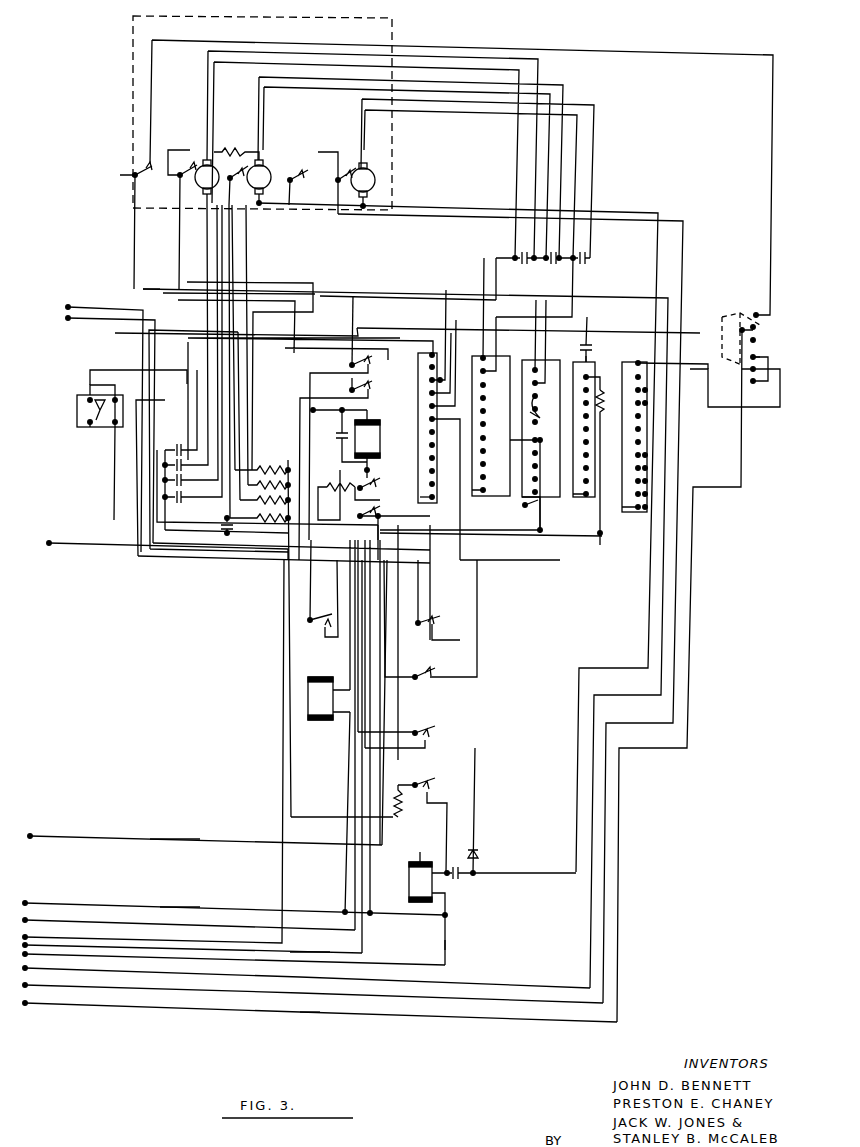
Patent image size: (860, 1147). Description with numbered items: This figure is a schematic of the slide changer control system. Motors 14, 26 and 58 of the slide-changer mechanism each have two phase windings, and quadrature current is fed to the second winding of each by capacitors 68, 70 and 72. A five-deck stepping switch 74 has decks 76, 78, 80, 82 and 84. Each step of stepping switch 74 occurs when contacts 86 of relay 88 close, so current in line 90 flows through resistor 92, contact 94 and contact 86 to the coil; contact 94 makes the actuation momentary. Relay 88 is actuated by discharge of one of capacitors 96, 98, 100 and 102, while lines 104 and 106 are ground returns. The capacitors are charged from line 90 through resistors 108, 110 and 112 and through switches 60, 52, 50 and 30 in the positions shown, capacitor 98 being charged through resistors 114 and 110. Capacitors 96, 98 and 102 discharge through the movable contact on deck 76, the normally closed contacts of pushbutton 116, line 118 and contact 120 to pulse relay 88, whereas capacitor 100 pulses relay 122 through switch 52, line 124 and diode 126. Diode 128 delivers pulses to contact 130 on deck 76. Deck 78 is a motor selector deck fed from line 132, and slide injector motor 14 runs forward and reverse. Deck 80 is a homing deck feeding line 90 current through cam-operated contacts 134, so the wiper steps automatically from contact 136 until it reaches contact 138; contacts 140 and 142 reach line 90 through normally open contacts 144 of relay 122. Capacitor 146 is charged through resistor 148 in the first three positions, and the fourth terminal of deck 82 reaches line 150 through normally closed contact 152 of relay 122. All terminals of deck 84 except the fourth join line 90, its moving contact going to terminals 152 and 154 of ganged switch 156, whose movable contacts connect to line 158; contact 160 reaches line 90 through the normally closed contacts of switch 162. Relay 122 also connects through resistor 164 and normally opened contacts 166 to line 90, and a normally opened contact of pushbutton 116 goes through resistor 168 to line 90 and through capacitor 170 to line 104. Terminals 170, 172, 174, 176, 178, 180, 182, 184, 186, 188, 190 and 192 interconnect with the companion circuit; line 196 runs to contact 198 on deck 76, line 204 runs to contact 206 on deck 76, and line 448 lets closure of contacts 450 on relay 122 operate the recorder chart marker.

The slide injector motor 14 is at (259, 160).
The motor 26 is at (207, 160).
The switch 30 is at (178, 172).
The switch 50 is at (230, 176).
The switch 52 is at (290, 178).
The motor 58 is at (375, 167).
The switch 60 is at (338, 178).
The capacitor 68 is at (547, 265).
The capacitor 70 is at (518, 254).
The capacitor 72 is at (582, 265).
The five-deck stepping switch 74 is at (375, 448).
The deck 76 is at (418, 360).
The motor selector deck 78 is at (480, 418).
The homing deck 80 is at (535, 362).
The deck 82 is at (586, 363).
The deck 84 is at (636, 362).
The contacts 86 is at (310, 618).
The relay 88 is at (312, 694).
The line 90 is at (540, 534).
The resistor 92 is at (349, 495).
The contact 94 is at (378, 476).
The capacitor 96 is at (175, 447).
The capacitor 98 is at (185, 337).
The capacitor 100 is at (190, 345).
The capacitor 102 is at (181, 498).
The line 104 is at (168, 907).
The line 106 is at (445, 945).
The resistor 108 is at (262, 423).
The resistor 110 is at (280, 480).
The resistor 112 is at (278, 465).
The resistor 114 is at (243, 148).
The pushbutton 116 is at (217, 424).
The line 118 is at (386, 396).
The contact 120 is at (382, 511).
The relay 122 is at (420, 860).
The line 124 is at (630, 208).
The diode 126 is at (460, 879).
The diode 128 is at (480, 852).
The contact 130 is at (419, 339).
The line 132 is at (600, 298).
The contacts 134 is at (352, 366).
The contact 136 is at (513, 465).
The contact 138 is at (528, 506).
The contact 140 is at (551, 343).
The contact 142 is at (550, 404).
The normally open contacts 144 is at (418, 620).
The capacitor 146 is at (588, 345).
The resistor 148 is at (610, 452).
The line 150 is at (167, 840).
The normally closed contact 152 is at (760, 355).
The terminal 154 is at (755, 382).
The ganged switch 156 is at (776, 335).
The line 158 is at (350, 1020).
The contact 160 is at (755, 310).
The switch 162 is at (128, 173).
The resistor 164 is at (419, 810).
The normally opened contacts 166 is at (335, 469).
The resistor 168 is at (278, 522).
The capacitor 170 is at (66, 306).
The terminal 172 is at (66, 318).
The terminal 174 is at (55, 547).
The terminal 176 is at (33, 833).
The terminal 178 is at (27, 901).
The terminal 180 is at (28, 919).
The terminal 182 is at (28, 935).
The terminal 184 is at (65, 950).
The terminal 186 is at (28, 956).
The terminal 188 is at (28, 970).
The terminal 190 is at (28, 987).
The terminal 192 is at (28, 1005).
The line 196 is at (200, 565).
The contact 198 is at (420, 408).
The line 204 is at (110, 557).
The contact 206 is at (420, 421).
The line 448 is at (302, 962).
The contacts 450 is at (428, 744).